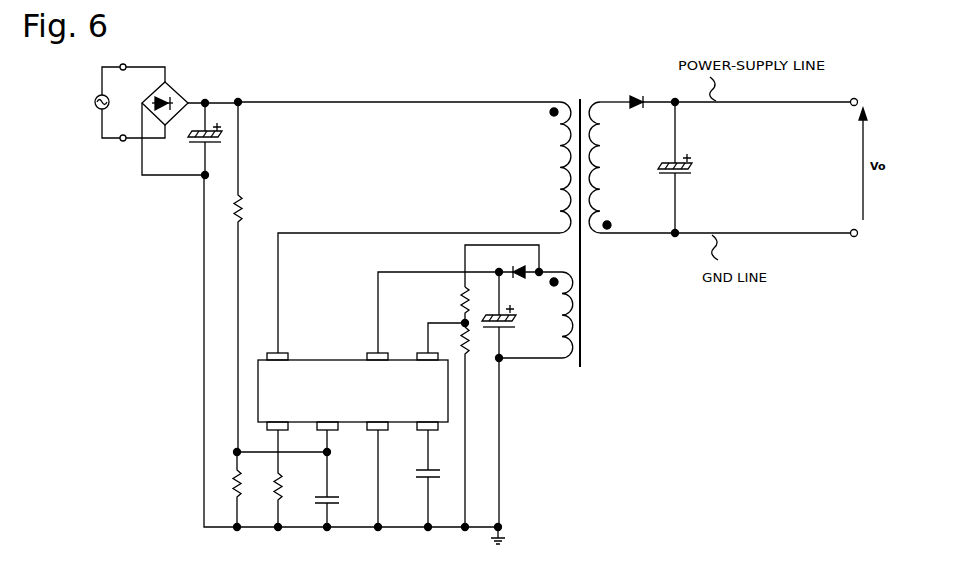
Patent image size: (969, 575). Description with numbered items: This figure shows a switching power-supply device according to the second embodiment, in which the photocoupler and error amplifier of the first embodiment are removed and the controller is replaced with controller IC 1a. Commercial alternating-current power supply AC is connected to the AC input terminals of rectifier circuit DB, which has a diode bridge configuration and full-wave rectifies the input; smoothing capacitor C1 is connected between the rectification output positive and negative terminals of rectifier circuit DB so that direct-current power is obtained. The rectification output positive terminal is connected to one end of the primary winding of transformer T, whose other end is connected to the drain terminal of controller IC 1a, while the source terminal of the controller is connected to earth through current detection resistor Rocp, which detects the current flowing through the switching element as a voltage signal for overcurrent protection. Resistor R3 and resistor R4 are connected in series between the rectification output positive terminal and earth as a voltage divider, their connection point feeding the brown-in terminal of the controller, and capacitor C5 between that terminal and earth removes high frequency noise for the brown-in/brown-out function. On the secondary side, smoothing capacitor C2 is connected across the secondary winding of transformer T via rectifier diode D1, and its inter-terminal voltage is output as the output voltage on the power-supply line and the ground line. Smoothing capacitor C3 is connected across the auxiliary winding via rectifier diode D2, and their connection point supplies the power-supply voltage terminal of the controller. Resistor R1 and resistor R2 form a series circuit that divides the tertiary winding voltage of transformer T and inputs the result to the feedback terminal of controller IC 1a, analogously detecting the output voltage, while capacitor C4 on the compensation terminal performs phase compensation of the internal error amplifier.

The controller IC 1a is at (323, 360).
The commercial alternating-current power supply AC is at (118, 108).
The rectifier circuit DB is at (190, 128).
The smoothing capacitor C1 is at (202, 139).
The resistor R3 is at (250, 277).
The transformer T is at (579, 224).
The rectifier diode D1 is at (639, 93).
The smoothing capacitor C2 is at (673, 167).
The rectifier diode D2 is at (537, 265).
The resistor R1 is at (454, 307).
The resistor R2 is at (454, 427).
The smoothing capacitor C3 is at (497, 399).
The resistor R4 is at (249, 489).
The current detection resistor Rocp is at (293, 478).
The capacitor C5 is at (331, 478).
The capacitor C4 is at (423, 478).